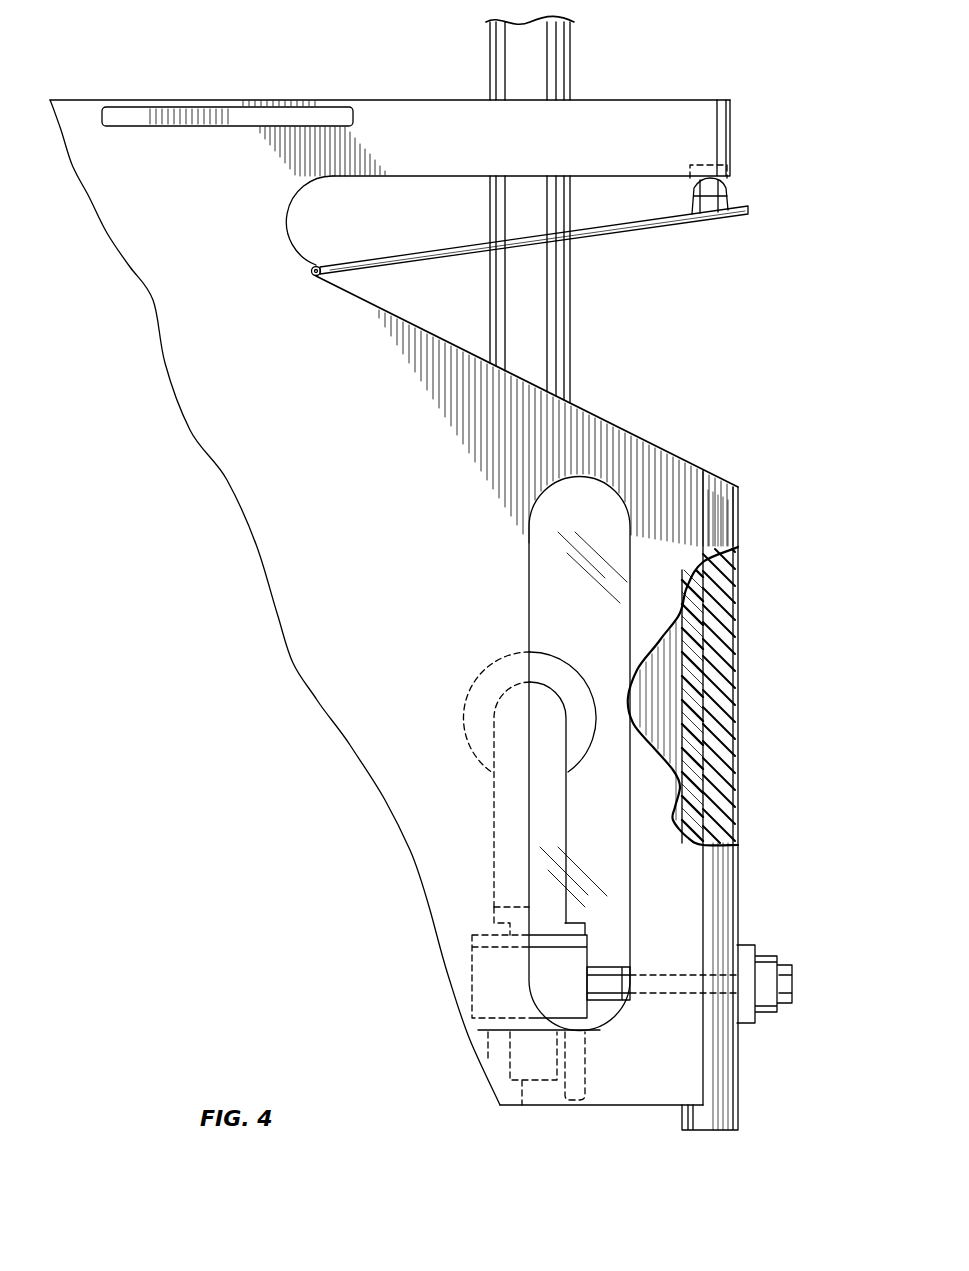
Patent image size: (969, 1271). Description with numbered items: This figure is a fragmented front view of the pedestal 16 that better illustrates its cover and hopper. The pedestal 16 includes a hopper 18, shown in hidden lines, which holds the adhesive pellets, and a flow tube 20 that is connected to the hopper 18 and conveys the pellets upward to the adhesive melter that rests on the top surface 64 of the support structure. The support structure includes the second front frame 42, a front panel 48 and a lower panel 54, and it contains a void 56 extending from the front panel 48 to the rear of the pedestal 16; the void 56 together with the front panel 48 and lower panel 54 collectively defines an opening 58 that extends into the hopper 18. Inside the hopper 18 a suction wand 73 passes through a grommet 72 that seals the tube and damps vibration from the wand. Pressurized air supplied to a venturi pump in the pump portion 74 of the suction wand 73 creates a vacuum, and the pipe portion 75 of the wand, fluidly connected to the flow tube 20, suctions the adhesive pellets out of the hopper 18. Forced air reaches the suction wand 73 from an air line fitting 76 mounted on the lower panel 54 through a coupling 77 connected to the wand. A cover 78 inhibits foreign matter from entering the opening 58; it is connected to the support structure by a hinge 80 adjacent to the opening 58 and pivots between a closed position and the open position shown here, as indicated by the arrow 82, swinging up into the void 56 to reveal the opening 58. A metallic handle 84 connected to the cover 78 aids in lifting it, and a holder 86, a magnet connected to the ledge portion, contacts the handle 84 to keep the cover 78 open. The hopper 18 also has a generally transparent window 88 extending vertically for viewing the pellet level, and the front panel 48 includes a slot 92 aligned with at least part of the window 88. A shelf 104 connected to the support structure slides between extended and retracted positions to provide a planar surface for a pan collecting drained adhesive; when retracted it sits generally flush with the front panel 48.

The pedestal 16 is at (122, 41).
The hopper 18 is at (693, 727).
The flow tube 20 is at (572, 78).
The second front frame 42 is at (731, 664).
The front panel 48 is at (392, 594).
The lower panel 54 is at (738, 626).
The void 56 is at (351, 220).
The opening 58 is at (667, 440).
The top surface 64 is at (364, 100).
The grommet 72 is at (570, 773).
The suction wand 73 is at (596, 961).
The pump portion 74 is at (590, 942).
The pipe portion 75 is at (570, 817).
The air line fitting 76 is at (768, 952).
The coupling 77 is at (672, 995).
The cover 78 is at (686, 225).
The hinge 80 is at (317, 266).
The arrow 82 is at (661, 272).
The handle 84 is at (730, 194).
The holder 86 is at (712, 165).
The generally transparent window 88 is at (590, 634).
The slot 92 is at (612, 489).
The shelf 104 is at (191, 107).